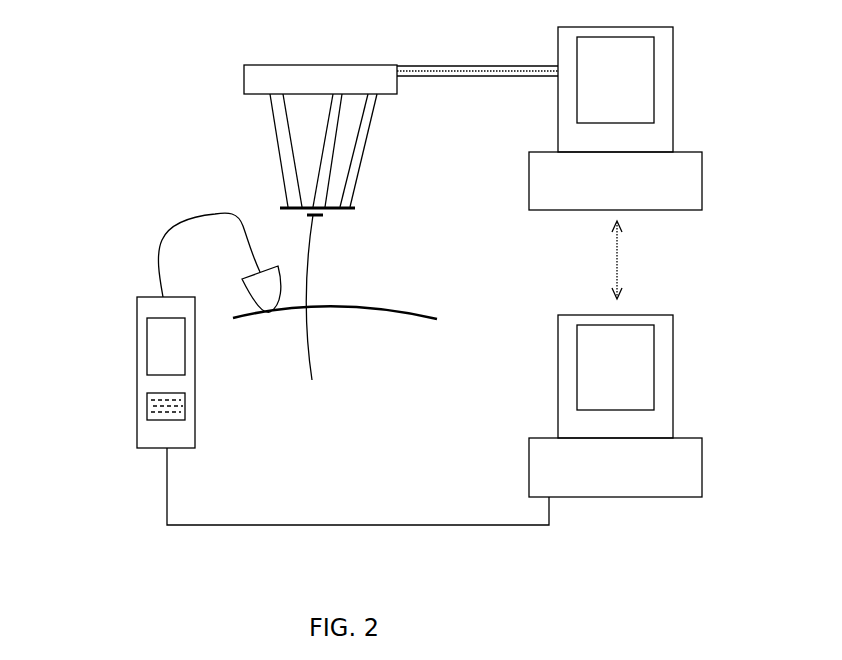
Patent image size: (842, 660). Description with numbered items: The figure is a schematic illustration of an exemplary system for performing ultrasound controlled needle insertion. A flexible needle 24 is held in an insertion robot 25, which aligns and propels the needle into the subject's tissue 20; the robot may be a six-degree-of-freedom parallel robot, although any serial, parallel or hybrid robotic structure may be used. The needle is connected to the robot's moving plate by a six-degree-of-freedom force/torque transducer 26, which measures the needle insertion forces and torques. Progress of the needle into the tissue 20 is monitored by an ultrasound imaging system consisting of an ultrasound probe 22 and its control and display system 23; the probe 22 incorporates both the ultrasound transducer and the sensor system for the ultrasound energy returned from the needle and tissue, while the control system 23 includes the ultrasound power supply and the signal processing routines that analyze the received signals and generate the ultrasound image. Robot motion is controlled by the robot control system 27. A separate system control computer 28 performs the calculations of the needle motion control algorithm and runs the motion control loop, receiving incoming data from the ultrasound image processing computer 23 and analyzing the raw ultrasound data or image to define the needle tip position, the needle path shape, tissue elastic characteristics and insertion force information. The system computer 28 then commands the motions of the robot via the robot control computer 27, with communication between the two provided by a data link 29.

The tissue 20 is at (367, 310).
The ultrasound probe 22 is at (250, 297).
The control and display system 23 is at (125, 358).
The flexible needle 24 is at (305, 358).
The insertion robot 25 is at (268, 117).
The force/torque transducer 26 is at (320, 218).
The robot control system 27 is at (677, 68).
The system control computer 28 is at (677, 357).
The data link 29 is at (625, 250).